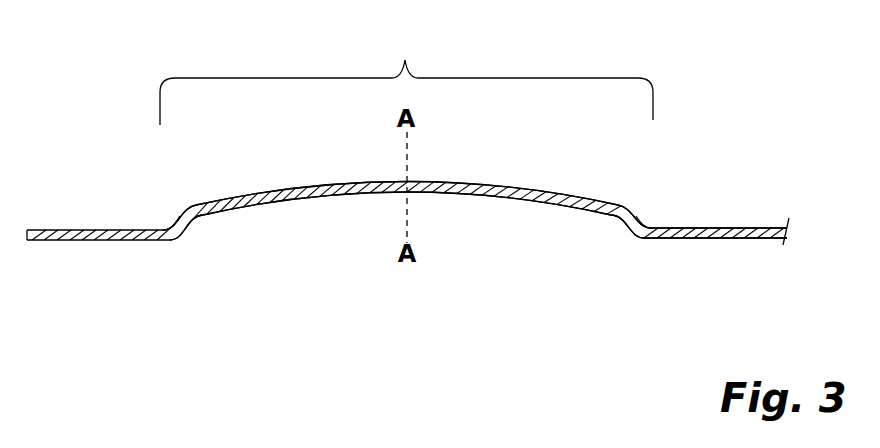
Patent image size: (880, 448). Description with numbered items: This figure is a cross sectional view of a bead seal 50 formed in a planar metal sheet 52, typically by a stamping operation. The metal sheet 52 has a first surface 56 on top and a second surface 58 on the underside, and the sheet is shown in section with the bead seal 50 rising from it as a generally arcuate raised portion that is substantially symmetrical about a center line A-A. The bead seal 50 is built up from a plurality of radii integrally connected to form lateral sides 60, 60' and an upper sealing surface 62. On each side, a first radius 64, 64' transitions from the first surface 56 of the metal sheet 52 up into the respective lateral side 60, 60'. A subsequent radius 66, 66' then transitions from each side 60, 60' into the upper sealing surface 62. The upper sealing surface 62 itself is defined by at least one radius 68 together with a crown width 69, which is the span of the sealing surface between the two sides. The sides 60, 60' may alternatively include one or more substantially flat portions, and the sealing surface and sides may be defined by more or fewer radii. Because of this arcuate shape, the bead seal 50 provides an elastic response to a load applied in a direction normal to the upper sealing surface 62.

The bead seal 50 is at (406, 75).
The metal sheet 52 is at (800, 231).
The first surface 56 is at (719, 227).
The second surface 58 is at (722, 238).
The lateral side 60 is at (176, 194).
The lateral side 60' is at (641, 192).
The upper sealing surface 62 is at (421, 183).
The first radius 64 is at (151, 208).
The first radius 64' is at (667, 204).
The subsequent radius 66 is at (209, 240).
The subsequent radius 66' is at (600, 239).
The radius 68 is at (433, 200).
The crown width 69 is at (629, 196).